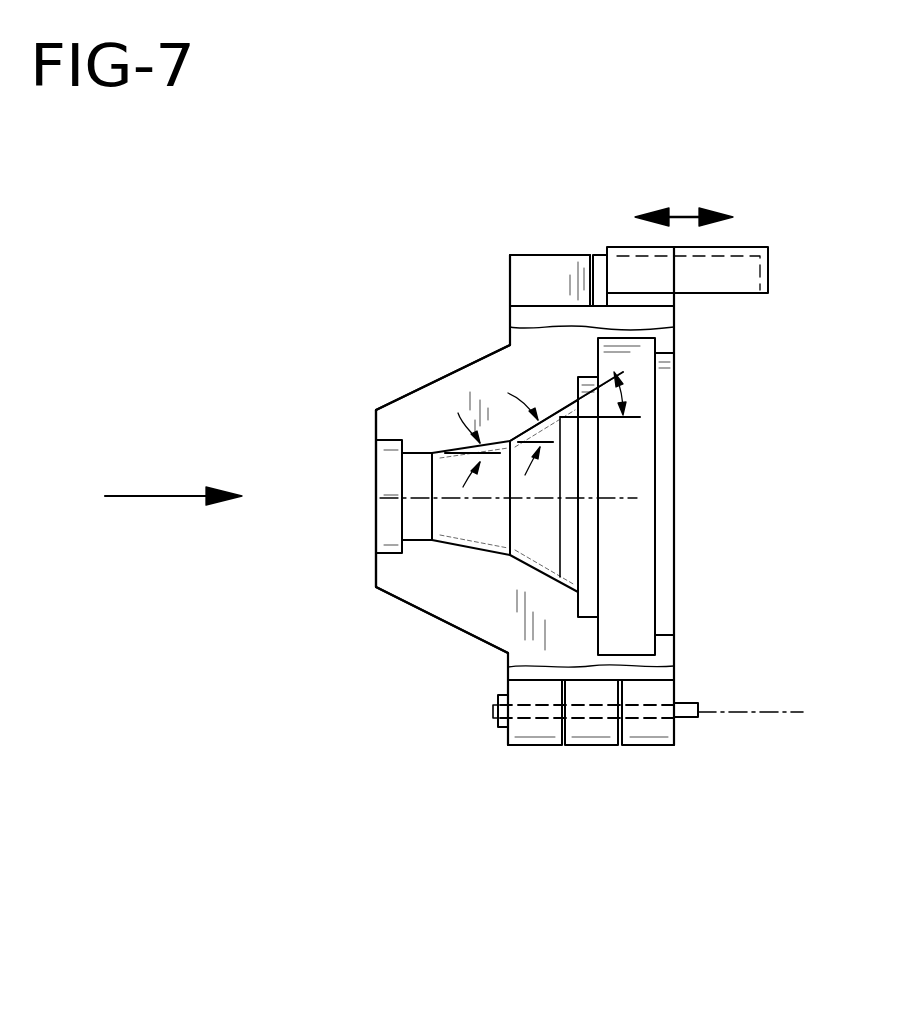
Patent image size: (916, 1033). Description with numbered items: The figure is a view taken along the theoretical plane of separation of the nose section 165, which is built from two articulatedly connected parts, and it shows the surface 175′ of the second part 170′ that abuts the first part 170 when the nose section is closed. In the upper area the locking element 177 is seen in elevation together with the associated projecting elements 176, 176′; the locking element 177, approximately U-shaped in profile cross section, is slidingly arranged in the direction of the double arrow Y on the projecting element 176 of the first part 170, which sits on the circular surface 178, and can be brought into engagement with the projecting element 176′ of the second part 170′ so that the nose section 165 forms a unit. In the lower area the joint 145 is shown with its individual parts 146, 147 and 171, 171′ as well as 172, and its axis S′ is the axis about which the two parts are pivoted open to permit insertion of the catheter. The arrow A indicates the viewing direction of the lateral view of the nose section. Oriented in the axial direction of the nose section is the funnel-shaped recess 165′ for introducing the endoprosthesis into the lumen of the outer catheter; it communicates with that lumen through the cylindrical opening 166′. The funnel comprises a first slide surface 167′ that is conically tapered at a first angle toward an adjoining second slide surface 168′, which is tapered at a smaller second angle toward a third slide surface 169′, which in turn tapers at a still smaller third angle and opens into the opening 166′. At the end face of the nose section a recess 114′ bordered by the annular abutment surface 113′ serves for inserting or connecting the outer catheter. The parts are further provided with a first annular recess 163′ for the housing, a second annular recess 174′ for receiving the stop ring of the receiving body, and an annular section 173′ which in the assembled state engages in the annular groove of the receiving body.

The nose section 165 is at (258, 263).
The funnel-shaped recess 165′ is at (662, 490).
The opening 166′ is at (410, 480).
The third slide surface 169′ is at (420, 512).
The annular abutment surface 113′ is at (397, 545).
The recess 114′ is at (377, 458).
The first part 170 is at (478, 302).
The second part 170′ is at (425, 358).
The surface 175′ is at (462, 598).
The circular surface 178 is at (537, 305).
The projecting element 176 is at (638, 270).
The projecting element 176′ is at (537, 270).
The locking element 177 is at (750, 246).
The second annular recess 174′ is at (655, 350).
The annular section 173′ is at (662, 360).
The second slide surface 168′ is at (537, 563).
The first slide surface 167′ is at (575, 590).
The first annular recess 163′ is at (597, 612).
The joint part 171 is at (537, 747).
The joint part 171′ is at (645, 747).
The joint part 172 is at (592, 747).
The joint 145 is at (455, 715).
The joint part 146 is at (495, 730).
The joint part 147 is at (683, 720).
The axis S′ is at (777, 712).
The arrow A is at (160, 494).
The double arrow Y is at (682, 210).